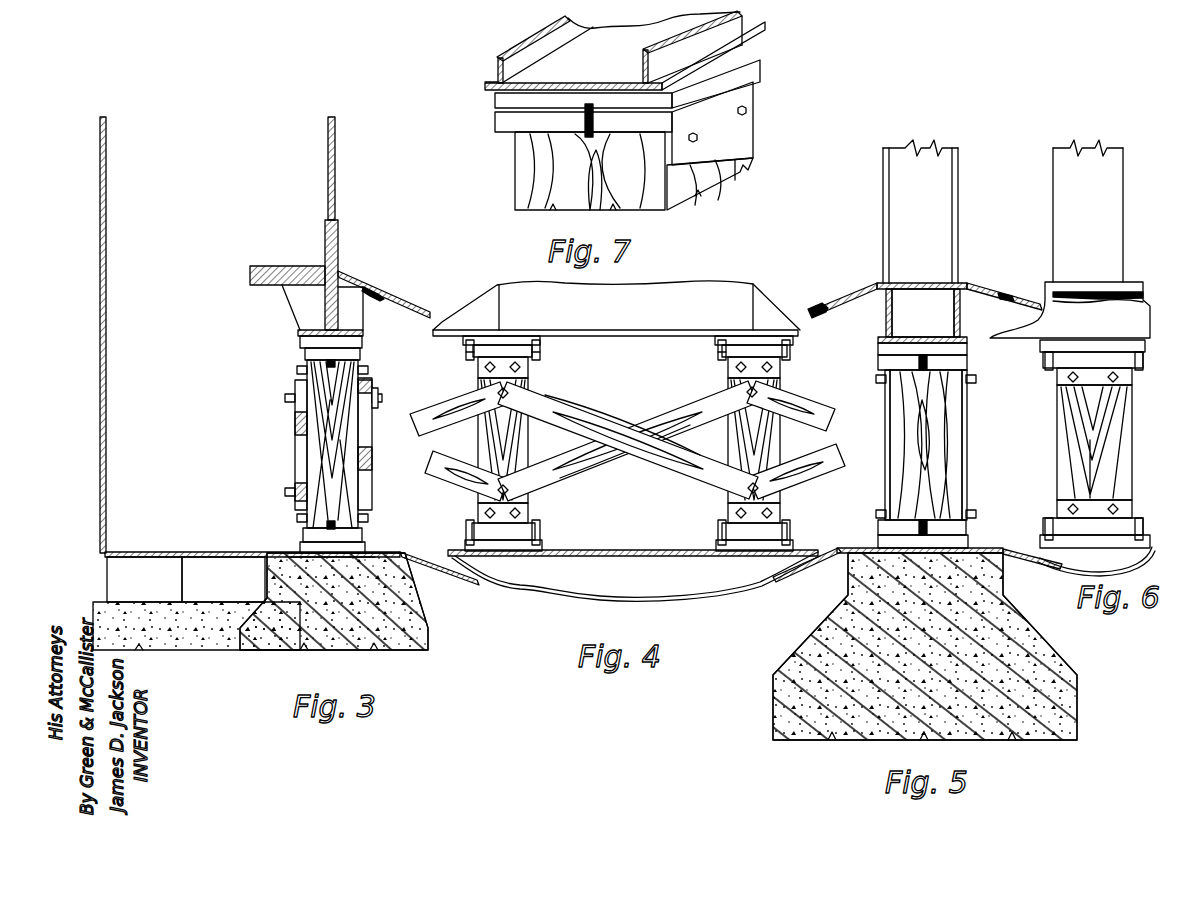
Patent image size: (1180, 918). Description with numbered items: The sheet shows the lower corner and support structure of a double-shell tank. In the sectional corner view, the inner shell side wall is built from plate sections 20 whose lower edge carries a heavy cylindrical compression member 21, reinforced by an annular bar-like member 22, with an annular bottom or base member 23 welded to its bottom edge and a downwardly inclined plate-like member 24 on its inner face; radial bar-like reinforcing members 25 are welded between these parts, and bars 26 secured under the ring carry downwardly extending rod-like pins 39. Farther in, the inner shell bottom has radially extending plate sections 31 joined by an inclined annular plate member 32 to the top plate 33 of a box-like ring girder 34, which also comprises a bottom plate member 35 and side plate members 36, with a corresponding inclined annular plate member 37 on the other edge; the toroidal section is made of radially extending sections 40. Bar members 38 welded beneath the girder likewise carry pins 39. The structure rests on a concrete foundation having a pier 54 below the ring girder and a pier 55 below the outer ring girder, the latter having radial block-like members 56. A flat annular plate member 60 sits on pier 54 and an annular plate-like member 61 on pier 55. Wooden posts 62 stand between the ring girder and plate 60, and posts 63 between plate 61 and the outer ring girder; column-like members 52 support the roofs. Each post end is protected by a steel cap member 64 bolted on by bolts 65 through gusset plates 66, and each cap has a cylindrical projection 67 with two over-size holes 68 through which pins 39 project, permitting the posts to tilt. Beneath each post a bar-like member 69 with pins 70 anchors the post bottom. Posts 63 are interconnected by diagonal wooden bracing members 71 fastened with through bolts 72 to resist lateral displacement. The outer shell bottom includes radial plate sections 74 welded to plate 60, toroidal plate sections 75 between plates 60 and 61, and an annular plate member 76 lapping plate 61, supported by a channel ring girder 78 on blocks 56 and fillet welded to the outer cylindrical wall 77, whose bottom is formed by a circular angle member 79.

In FIG. 3, the plate sections 20 is at (328, 164).
In FIG. 3, the compression member 21 is at (338, 255).
In FIG. 3, the bar-like member 22 is at (283, 266).
In FIG. 3, the bottom or base member 23 is at (300, 334).
In FIG. 4, the bottom or base member 23 is at (607, 336).
In FIG. 3, the inclined plate-like member 24 is at (352, 285).
In FIG. 3, the bar-like reinforcing members 25 is at (300, 302).
In FIG. 4, the bar-like reinforcing members 25 is at (501, 307).
In FIG. 3, the bars 26 is at (463, 340).
In FIG. 4, the bars 26 is at (628, 340).
In FIG. 6, the radially extending plate sections 31 is at (1036, 306).
In FIG. 5, the annular plate member 32 is at (978, 287).
In FIG. 5, the top plate 33 is at (918, 283).
In FIG. 5, the ring girder 34 is at (899, 324).
In FIG. 7, the bottom plate member 35 is at (573, 74).
In FIG. 5, the bottom plate member 35 is at (880, 342).
In FIG. 7, the side plate members 36 is at (497, 66).
In FIG. 5, the side plate members 36 is at (886, 316).
In FIG. 5, the annular plate member 37 is at (868, 290).
In FIG. 7, the bar members 38 is at (766, 42).
In FIG. 5, the bar members 38 is at (1045, 346).
In FIG. 6, the bar members 38 is at (1092, 346).
In FIG. 4, the rod-like pins 39 is at (467, 357).
In FIG. 7, the rod-like pins 39 is at (582, 125).
In FIG. 6, the rod-like pins 39 is at (1047, 372).
In FIG. 3, the radially extending sections 40 is at (400, 306).
In FIG. 5, the radially extending sections 40 is at (820, 306).
In FIG. 5, the column-like members 52 is at (1080, 200).
In FIG. 6, the column-like members 52 is at (1088, 211).
In FIG. 5, the pier 54 is at (1042, 694).
In FIG. 3, the pier 55 is at (420, 634).
In FIG. 3, the block-like members 56 is at (190, 636).
In FIG. 5, the annular plate member 60 is at (877, 548).
In FIG. 3, the annular plate-like member 61 is at (383, 551).
In FIG. 4, the annular plate-like member 61 is at (634, 575).
In FIG. 5, the posts 62 is at (1065, 456).
In FIG. 6, the posts 62 is at (1094, 442).
In FIG. 4, the posts 63 is at (487, 444).
In FIG. 3, the cap members 64 is at (305, 356).
In FIG. 4, the cap members 64 is at (718, 349).
In FIG. 7, the cap members 64 is at (765, 73).
In FIG. 5, the cap members 64 is at (885, 366).
In FIG. 6, the cap members 64 is at (1093, 443).
In FIG. 3, the bolts 65 is at (368, 371).
In FIG. 7, the bolts 65 is at (700, 137).
In FIG. 5, the bolts 65 is at (974, 381).
In FIG. 4, the gusset plates 66 is at (527, 368).
In FIG. 7, the gusset plates 66 is at (765, 103).
In FIG. 5, the gusset plates 66 is at (886, 386).
In FIG. 6, the gusset plates 66 is at (1094, 443).
In FIG. 4, the cylindrical projection 67 is at (541, 346).
In FIG. 7, the cylindrical projection 67 is at (578, 104).
In FIG. 5, the cylindrical projection 67 is at (880, 352).
In FIG. 3, the holes 68 is at (331, 444).
In FIG. 4, the holes 68 is at (543, 352).
In FIG. 7, the holes 68 is at (594, 119).
In FIG. 5, the holes 68 is at (923, 527).
In FIG. 3, the bar-like member 69 is at (332, 547).
In FIG. 4, the bar-like member 69 is at (543, 545).
In FIG. 5, the bar-like member 69 is at (967, 541).
In FIG. 6, the bar-like member 69 is at (1095, 541).
In FIG. 4, the rod-like pins 70 is at (537, 525).
In FIG. 6, the rod-like pins 70 is at (1049, 520).
In FIG. 3, the bracing members 71 is at (296, 463).
In FIG. 4, the bracing members 71 is at (603, 460).
In FIG. 3, the through bolts 72 is at (287, 398).
In FIG. 6, the plate sections 74 is at (1035, 569).
In FIG. 4, the plate sections 75 is at (445, 572).
In FIG. 5, the plate sections 75 is at (790, 578).
In FIG. 3, the annular plate member 76 is at (240, 552).
In FIG. 3, the cylindrical wall 77 is at (107, 359).
In FIG. 3, the ring girder 78 is at (186, 582).
In FIG. 3, the angle member 79 is at (112, 597).